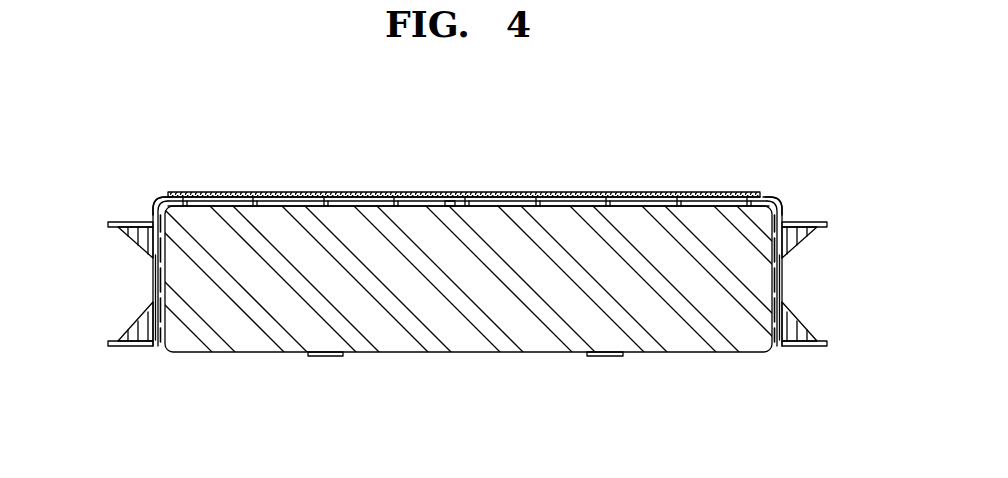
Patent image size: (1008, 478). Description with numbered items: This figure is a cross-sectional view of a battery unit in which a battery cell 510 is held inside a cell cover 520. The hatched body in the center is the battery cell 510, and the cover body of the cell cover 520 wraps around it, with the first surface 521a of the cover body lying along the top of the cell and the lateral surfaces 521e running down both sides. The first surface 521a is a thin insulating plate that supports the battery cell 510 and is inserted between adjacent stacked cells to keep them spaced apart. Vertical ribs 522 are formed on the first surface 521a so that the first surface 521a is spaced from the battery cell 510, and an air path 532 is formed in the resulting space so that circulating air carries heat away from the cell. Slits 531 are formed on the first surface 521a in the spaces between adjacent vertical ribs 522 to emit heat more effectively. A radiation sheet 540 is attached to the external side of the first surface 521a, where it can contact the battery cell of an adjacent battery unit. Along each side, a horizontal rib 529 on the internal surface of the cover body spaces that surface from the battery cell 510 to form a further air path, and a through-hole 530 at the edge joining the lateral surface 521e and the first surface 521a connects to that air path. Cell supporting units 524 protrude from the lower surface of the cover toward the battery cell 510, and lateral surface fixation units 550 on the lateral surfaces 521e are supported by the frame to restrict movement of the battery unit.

The battery cell 510 is at (468, 352).
The cell cover 520 is at (148, 205).
The first surface 521a is at (405, 200).
The lateral surface 521e is at (157, 290).
The vertical rib 522 is at (451, 202).
The cell supporting unit 524 is at (325, 357).
The horizontal rib 529 is at (158, 273).
The through-hole 530 is at (153, 201).
The slit 531 is at (291, 197).
The air path 532 is at (517, 200).
The radiation sheet 540 is at (592, 192).
The lateral surface fixation unit 550 is at (141, 303).